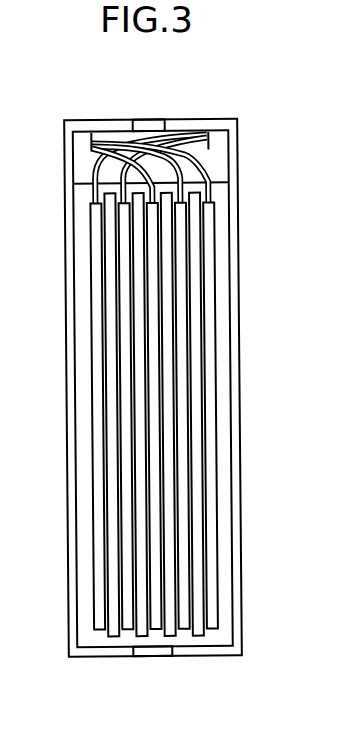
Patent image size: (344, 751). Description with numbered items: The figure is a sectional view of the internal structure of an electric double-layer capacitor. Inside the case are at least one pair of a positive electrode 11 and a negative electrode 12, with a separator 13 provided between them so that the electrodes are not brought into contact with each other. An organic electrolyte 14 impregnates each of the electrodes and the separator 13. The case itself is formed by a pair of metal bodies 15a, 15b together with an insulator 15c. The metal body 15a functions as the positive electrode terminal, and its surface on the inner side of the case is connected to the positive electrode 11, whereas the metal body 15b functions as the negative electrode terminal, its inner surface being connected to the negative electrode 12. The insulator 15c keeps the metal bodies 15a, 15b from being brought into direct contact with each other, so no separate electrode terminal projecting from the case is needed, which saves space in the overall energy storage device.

The positive electrode 11 is at (130, 648).
The negative electrode 12 is at (92, 600).
The separator 13 is at (103, 635).
The organic electrolyte 14 is at (220, 228).
The metal body 15a is at (206, 118).
The metal body 15b is at (97, 118).
The insulator 15c is at (150, 118).